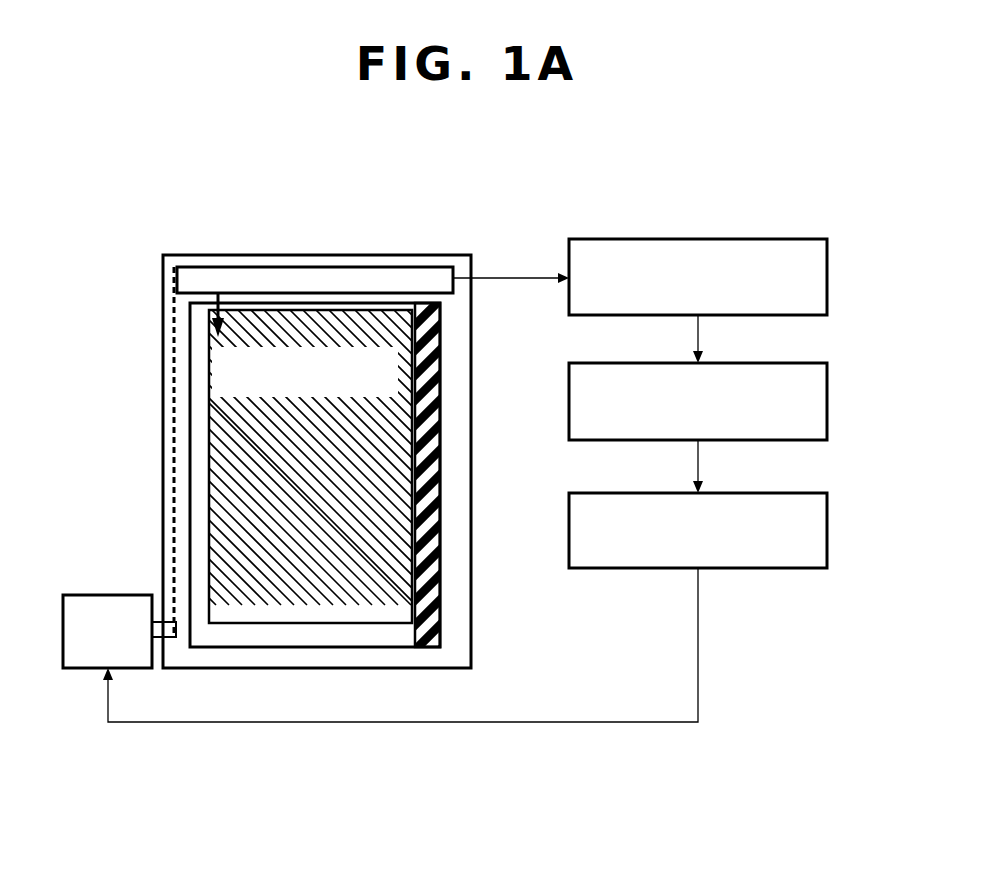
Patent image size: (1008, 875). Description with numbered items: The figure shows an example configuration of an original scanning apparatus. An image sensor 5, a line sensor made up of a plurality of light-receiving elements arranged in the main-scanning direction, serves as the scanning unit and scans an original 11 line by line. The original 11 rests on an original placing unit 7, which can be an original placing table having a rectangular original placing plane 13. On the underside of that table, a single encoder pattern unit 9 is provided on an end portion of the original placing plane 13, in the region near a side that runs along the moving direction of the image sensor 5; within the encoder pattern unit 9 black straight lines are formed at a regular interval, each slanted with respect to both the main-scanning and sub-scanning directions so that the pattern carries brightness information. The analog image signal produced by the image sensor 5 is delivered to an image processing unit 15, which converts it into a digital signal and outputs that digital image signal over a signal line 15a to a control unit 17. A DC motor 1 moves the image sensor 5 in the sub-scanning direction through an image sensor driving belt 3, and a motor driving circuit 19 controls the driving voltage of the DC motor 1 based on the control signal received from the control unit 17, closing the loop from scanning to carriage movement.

The DC motor 1 is at (78, 595).
The image sensor driving belt 3 is at (175, 459).
The image sensor 5 is at (413, 267).
The original placing unit 7 is at (471, 342).
The encoder pattern unit 9 is at (440, 400).
The original 11 is at (400, 548).
The original placing plane 13 is at (398, 636).
The image processing unit 15 is at (827, 278).
The signal line 15a is at (700, 340).
The control unit 17 is at (827, 403).
The motor driving circuit 19 is at (827, 530).